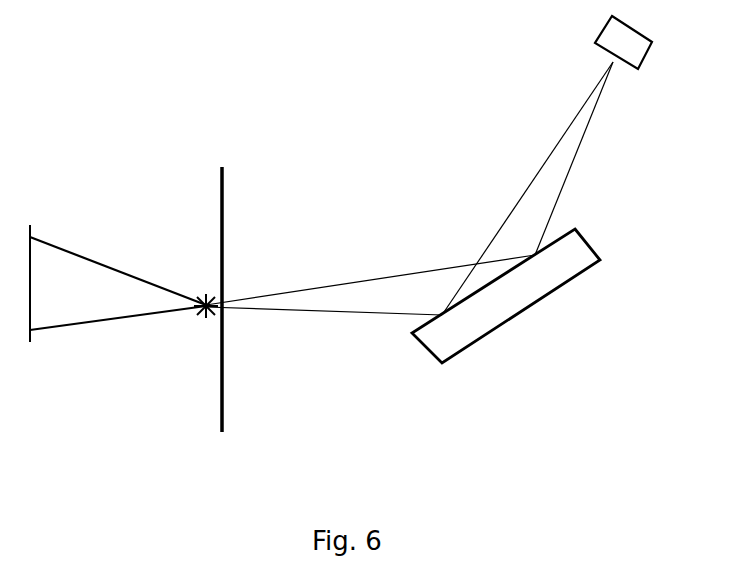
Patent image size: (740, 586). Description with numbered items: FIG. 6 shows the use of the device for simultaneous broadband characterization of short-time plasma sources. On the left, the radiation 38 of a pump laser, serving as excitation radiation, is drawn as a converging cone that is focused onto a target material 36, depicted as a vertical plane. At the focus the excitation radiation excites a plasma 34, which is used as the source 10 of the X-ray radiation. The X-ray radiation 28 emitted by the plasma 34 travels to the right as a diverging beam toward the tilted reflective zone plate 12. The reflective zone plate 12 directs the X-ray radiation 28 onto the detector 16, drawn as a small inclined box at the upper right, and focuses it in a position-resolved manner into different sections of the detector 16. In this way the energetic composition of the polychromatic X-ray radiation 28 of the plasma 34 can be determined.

The radiation of a pump laser 38 is at (68, 270).
The plasma 34 is at (158, 342).
The source 10 is at (206, 306).
The target material 36 is at (211, 326).
The X-ray radiation 28 is at (320, 302).
The reflective zone plate 12 is at (506, 296).
The detector 16 is at (571, 165).